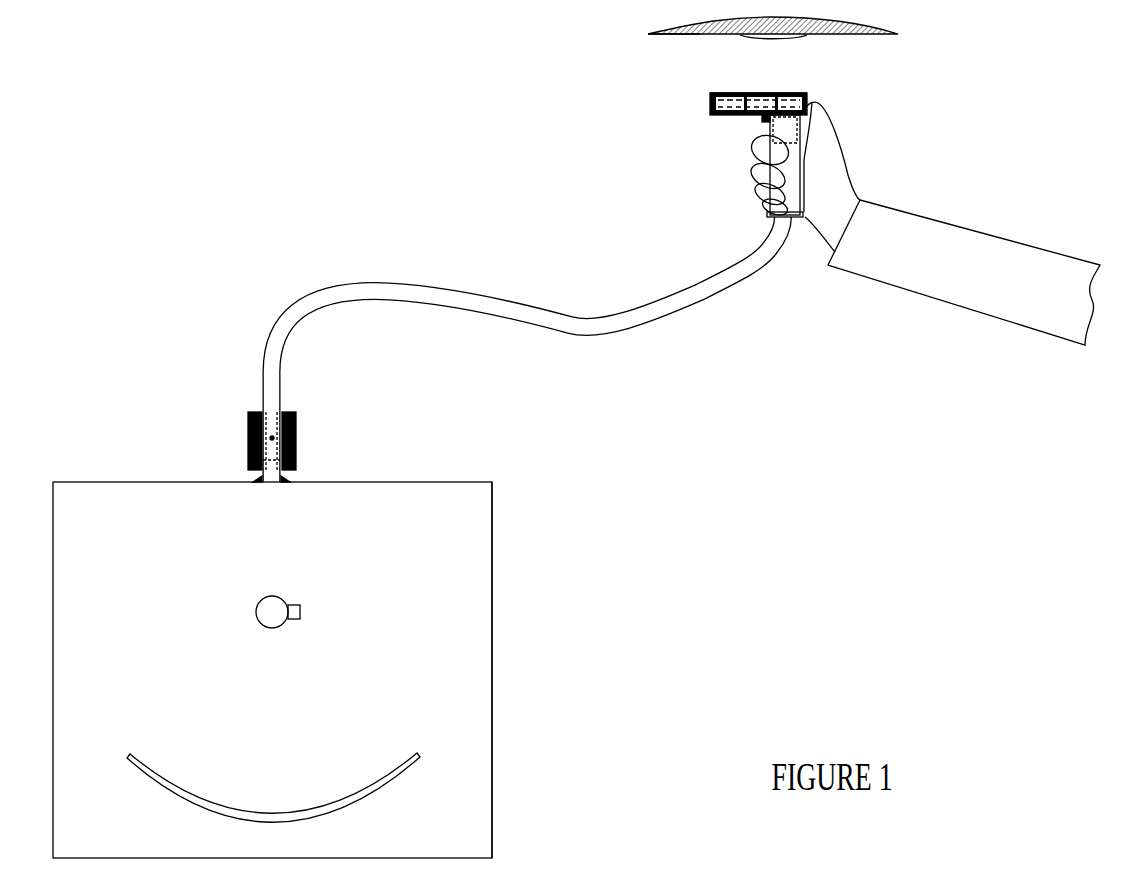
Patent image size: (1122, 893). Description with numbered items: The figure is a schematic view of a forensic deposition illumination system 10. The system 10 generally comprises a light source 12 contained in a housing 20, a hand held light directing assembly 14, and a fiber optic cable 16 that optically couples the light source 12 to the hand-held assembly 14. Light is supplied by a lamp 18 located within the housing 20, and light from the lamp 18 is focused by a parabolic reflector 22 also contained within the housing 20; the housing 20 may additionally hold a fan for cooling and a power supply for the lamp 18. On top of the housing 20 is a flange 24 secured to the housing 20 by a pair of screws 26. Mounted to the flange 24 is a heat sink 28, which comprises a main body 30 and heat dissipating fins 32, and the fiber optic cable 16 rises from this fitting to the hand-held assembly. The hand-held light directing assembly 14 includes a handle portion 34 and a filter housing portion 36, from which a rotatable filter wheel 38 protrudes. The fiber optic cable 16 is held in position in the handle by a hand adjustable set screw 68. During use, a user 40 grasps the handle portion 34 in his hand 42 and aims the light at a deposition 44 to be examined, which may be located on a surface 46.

The forensic deposition illumination system 10 is at (284, 151).
The light source 12 is at (492, 640).
The hand held light directing assembly 14 is at (780, 128).
The fiber optic cable 16 is at (640, 324).
The lamp 18 is at (301, 611).
The housing 20 is at (490, 525).
The parabolic reflector 22 is at (147, 773).
The flange 24 is at (287, 478).
The screws 26 is at (257, 478).
The heat sink 28 is at (258, 410).
The main body 30 is at (273, 408).
The heat dissipating fins 32 is at (294, 430).
The handle portion 34 is at (770, 212).
The filter housing portion 36 is at (710, 105).
The rotatable filter wheel 38 is at (809, 106).
The user 40 is at (1011, 317).
The hand 42 is at (823, 153).
The deposition 44 is at (803, 35).
The surface 46 is at (673, 34).
The hand adjustable set screw 68 is at (272, 438).